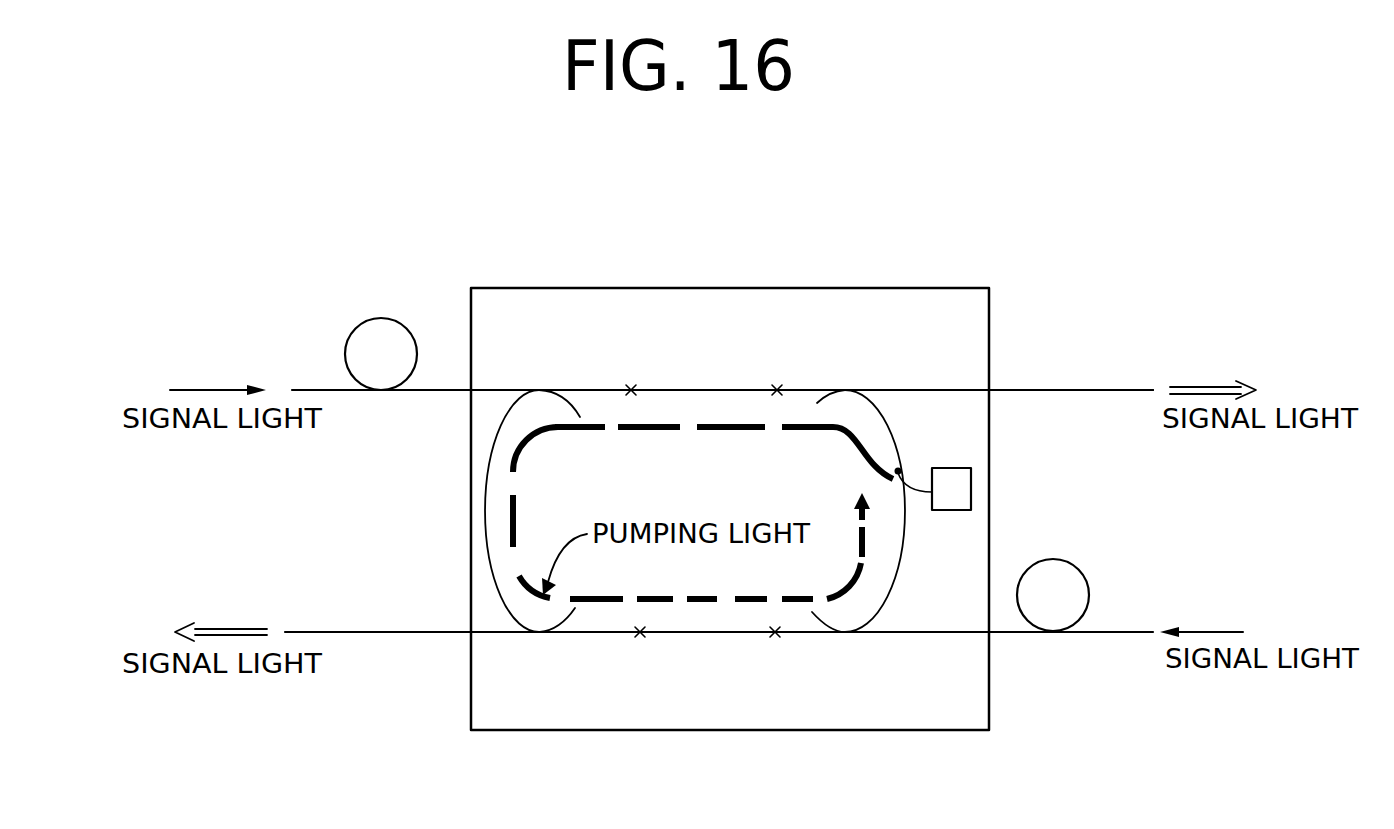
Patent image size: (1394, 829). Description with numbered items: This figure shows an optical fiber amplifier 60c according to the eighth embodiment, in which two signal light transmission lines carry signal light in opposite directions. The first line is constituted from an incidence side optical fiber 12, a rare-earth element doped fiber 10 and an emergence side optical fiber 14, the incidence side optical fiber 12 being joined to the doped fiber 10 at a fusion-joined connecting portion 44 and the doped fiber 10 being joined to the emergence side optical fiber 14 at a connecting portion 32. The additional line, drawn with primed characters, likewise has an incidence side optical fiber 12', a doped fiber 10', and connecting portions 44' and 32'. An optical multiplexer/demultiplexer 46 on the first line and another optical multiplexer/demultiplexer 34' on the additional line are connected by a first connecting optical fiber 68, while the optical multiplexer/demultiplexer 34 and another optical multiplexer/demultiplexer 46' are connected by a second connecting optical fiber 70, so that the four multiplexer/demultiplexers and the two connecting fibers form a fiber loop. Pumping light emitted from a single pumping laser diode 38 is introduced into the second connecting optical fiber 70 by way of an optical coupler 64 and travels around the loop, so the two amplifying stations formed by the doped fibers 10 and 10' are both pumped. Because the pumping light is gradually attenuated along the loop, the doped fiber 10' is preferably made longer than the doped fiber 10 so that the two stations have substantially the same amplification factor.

The optical fiber amplifier 60c is at (718, 284).
The incidence side optical fiber 12 is at (381, 324).
The incidence side optical fiber 12' is at (1071, 632).
The emergence side optical fiber 14 is at (1083, 389).
The rare-earth element doped fiber 10 is at (705, 356).
The doped fiber 10' is at (708, 675).
The connecting portion 44 is at (629, 359).
The connecting portion 44' is at (775, 670).
The connecting portion 32 is at (779, 361).
The connecting portion 32' is at (630, 666).
The optical multiplexer/demultiplexer 46 is at (548, 370).
The optical multiplexer/demultiplexer 46' is at (859, 653).
The optical multiplexer/demultiplexer 34 is at (842, 368).
The optical multiplexer/demultiplexer 34' is at (549, 655).
The first connecting optical fiber 68 is at (484, 525).
The second connecting optical fiber 70 is at (902, 563).
The optical coupler 64 is at (900, 468).
The pumping laser diode 38 is at (971, 479).